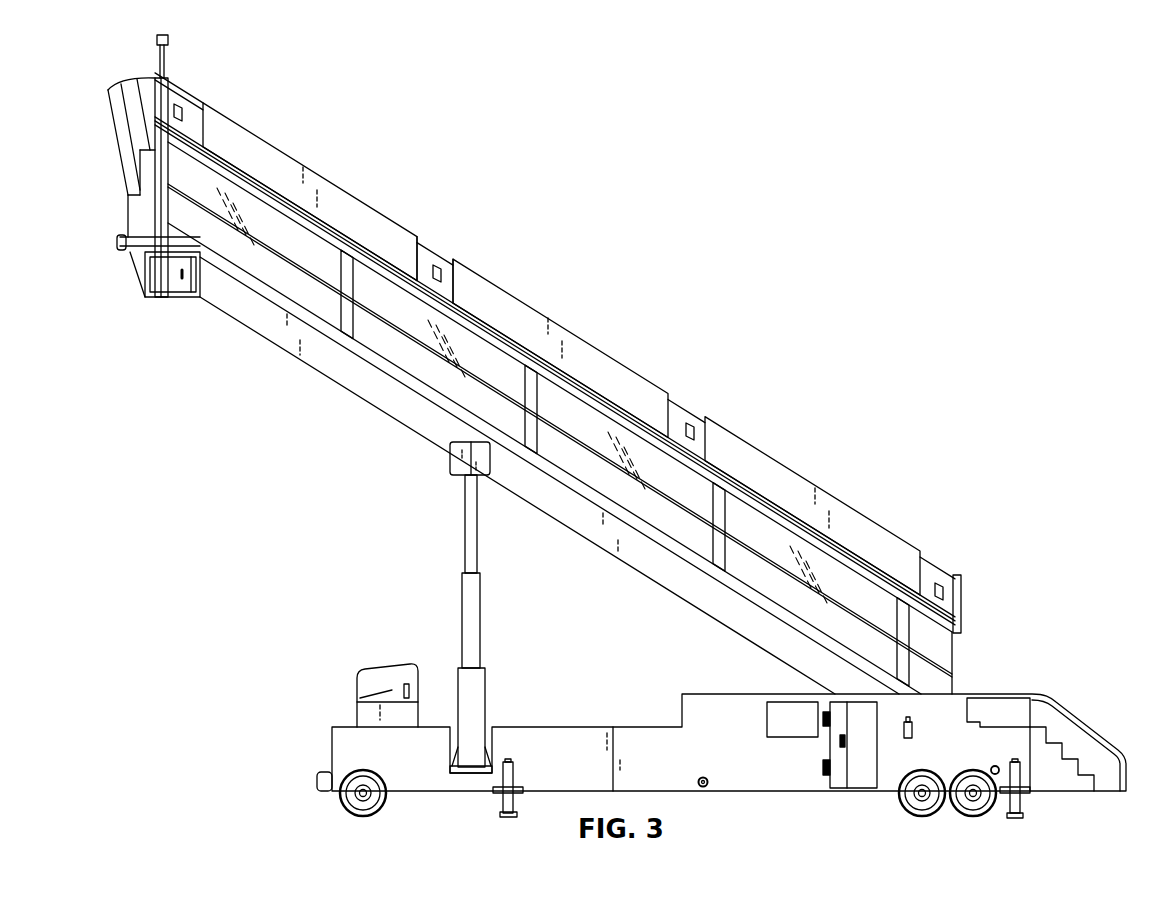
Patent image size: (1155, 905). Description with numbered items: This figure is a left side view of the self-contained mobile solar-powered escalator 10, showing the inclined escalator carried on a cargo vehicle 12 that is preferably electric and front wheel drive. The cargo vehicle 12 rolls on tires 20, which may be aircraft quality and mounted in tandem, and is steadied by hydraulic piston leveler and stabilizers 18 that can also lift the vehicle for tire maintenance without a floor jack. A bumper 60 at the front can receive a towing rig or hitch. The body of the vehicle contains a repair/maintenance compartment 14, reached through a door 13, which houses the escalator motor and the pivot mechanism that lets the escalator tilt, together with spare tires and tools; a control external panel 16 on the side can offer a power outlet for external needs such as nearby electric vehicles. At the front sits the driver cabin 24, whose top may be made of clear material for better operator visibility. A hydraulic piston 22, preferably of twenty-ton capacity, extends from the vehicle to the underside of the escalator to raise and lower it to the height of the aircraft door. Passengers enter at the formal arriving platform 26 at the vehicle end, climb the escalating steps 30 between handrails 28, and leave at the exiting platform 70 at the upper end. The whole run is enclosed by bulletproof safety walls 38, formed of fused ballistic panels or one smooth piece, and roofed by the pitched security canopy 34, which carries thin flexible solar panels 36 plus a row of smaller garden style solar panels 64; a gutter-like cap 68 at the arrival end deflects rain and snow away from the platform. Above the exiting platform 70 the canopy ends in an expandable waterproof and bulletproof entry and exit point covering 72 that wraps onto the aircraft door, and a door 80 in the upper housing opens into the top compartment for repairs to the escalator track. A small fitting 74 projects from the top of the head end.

The self-contained mobile solar-powered escalator 10 is at (441, 83).
The cargo vehicle 12 is at (570, 675).
The door 13 is at (833, 783).
The repair/maintenance compartment 14 is at (848, 782).
The control external panel 16 is at (797, 702).
The hydraulic piston leveler and stabilizers 18 is at (498, 803).
The tires 20 is at (367, 771).
The hydraulic pistons 22 is at (455, 529).
The driver cabin 24 is at (378, 672).
The formal arriving platform 26 is at (1019, 687).
The handrails 28 is at (937, 664).
The escalating steps 30 is at (267, 116).
The security canopy 34 is at (437, 235).
The solar panels 36 is at (330, 200).
The safety walls 38 is at (263, 262).
The bumper 60 is at (323, 773).
The smaller garden style solar panels 64 is at (183, 106).
The gutter-like cap 68 is at (962, 578).
The exiting platform 70 is at (116, 203).
The entry and exit point covering 72 is at (127, 80).
The light 74 is at (169, 40).
The door 80 is at (167, 292).